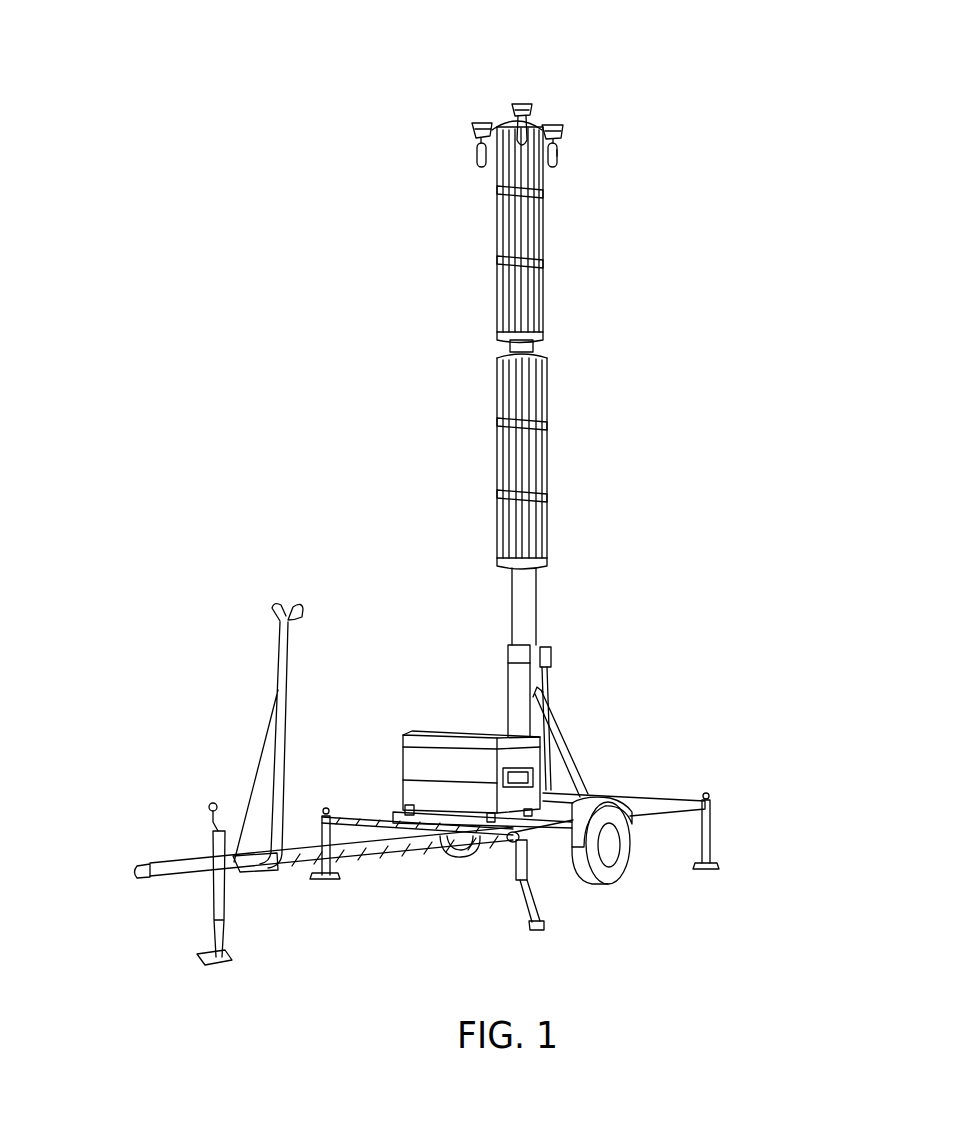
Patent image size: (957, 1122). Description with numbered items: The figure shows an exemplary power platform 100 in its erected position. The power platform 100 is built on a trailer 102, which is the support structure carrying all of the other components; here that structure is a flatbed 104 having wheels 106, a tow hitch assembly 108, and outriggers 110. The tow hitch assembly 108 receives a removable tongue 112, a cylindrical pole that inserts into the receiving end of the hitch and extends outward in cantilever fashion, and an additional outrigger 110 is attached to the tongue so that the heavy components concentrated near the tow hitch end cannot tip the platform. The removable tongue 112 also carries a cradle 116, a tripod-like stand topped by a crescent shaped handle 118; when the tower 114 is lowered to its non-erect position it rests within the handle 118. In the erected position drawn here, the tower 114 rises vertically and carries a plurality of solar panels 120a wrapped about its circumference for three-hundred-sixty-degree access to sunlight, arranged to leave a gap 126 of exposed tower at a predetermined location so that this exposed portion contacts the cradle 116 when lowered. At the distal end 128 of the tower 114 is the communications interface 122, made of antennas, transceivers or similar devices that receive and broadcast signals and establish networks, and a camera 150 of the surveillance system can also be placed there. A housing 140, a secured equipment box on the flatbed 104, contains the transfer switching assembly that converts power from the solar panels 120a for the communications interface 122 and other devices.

The power platform 100 is at (357, 195).
The trailer 102 is at (624, 778).
The flatbed 104 is at (500, 850).
The wheels 106 is at (620, 870).
The tow hitch assembly 108 is at (446, 850).
The outriggers 110 is at (224, 893).
The removable tongue 112 is at (182, 862).
The tower 114 is at (540, 606).
The cradle 116 is at (262, 757).
The crescent shaped handle 118 is at (303, 612).
The solar panel 120a is at (498, 300).
The communications interface 122 is at (482, 124).
The gap 126 is at (508, 344).
The distal end 128 is at (495, 118).
The housing 140 is at (470, 730).
The camera 150 is at (558, 153).